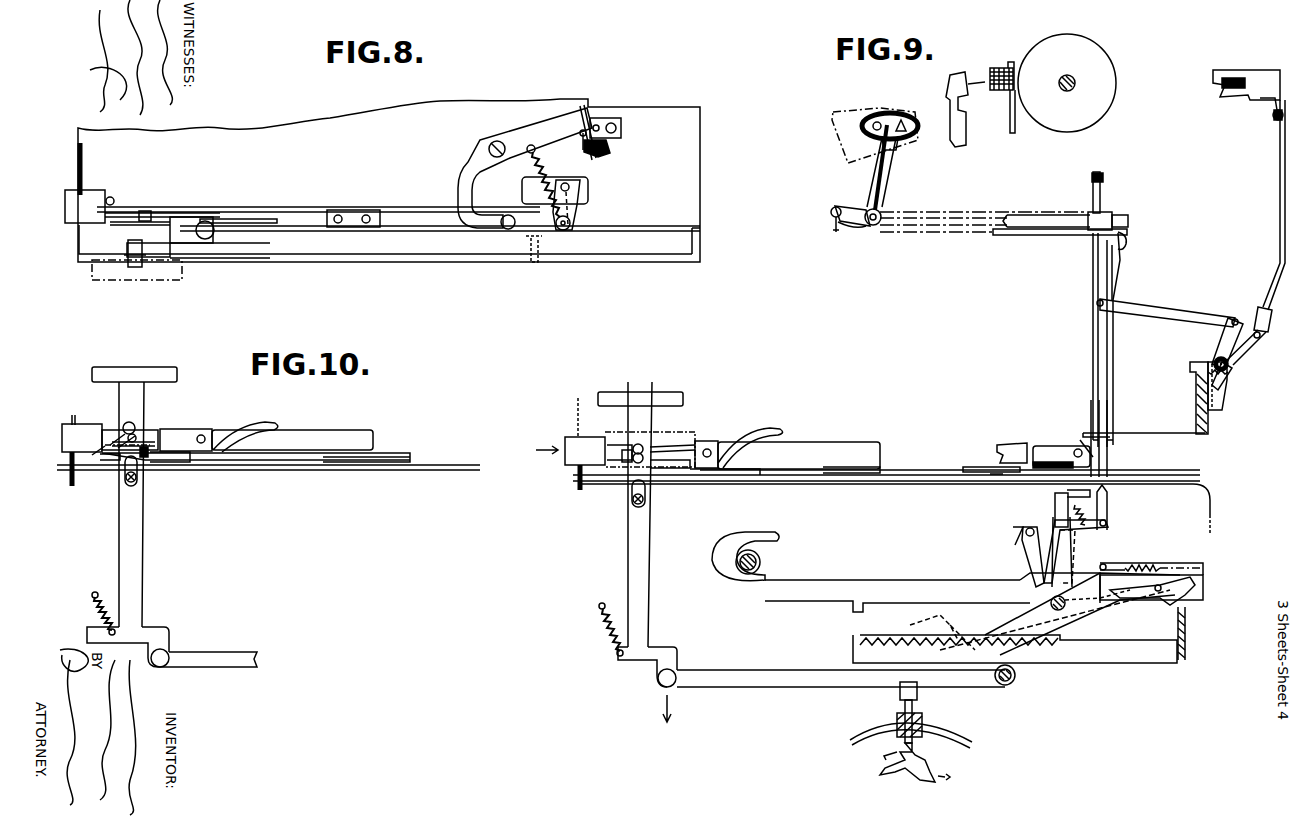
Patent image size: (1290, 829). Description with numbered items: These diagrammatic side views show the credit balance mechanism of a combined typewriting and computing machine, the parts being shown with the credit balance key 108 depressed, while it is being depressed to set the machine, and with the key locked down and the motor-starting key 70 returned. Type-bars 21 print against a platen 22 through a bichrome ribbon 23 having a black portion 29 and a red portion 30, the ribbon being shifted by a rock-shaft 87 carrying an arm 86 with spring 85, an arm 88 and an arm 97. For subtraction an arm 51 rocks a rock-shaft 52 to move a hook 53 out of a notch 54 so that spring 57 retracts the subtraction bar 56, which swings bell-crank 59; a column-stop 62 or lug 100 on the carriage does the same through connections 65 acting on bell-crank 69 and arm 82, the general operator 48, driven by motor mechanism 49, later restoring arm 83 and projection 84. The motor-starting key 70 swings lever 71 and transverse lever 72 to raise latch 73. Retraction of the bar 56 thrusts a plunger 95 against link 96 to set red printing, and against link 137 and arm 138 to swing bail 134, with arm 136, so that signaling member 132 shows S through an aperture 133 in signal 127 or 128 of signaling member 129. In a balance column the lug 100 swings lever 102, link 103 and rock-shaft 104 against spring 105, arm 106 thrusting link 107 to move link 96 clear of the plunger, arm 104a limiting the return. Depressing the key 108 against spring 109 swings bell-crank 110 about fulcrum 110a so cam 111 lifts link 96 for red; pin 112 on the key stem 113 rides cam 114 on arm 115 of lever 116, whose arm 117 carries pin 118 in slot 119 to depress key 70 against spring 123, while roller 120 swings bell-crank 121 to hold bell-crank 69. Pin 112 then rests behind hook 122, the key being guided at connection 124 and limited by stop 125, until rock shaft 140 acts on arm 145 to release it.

In FIG. 9, the type-bar 21 is at (966, 140).
In FIG. 9, the platen 22 is at (1067, 83).
In FIG. 9, the bichrome ribbon 23 is at (990, 73).
In FIG. 9, the black portion 29 is at (1010, 66).
In FIG. 9, the red portion 30 is at (1004, 90).
In FIG. 9, the general operator 48 is at (1058, 667).
In FIG. 9, the motor mechanism 49 is at (946, 777).
In FIG. 9, the arm 51 is at (1080, 535).
In FIG. 9, the rock-shaft 52 is at (1052, 606).
In FIG. 9, the hook 53 is at (1095, 600).
In FIG. 9, the notch 54 is at (1125, 595).
In FIG. 9, the subtraction bar 56 is at (986, 588).
In FIG. 9, the spring 57 is at (1172, 567).
In FIG. 9, the bell-crank 59 is at (1022, 545).
In FIG. 9, the column-stop 62 is at (1250, 100).
In FIG. 9, the connections 65 is at (1075, 620).
In FIG. 9, the bell-crank 69 is at (1175, 598).
In FIG. 8, the motor-starting key 70 is at (100, 280).
In FIG. 10, the motor-starting key 70 is at (177, 375).
In FIG. 9, the motor-starting key 70 is at (673, 392).
In FIG. 10, the lever 71 is at (205, 668).
In FIG. 9, the lever 71 is at (836, 676).
In FIG. 9, the transverse lever 72 is at (900, 692).
In FIG. 9, the latch 73 is at (918, 713).
In FIG. 9, the arm 82 is at (1072, 572).
In FIG. 9, the arm 83 is at (948, 622).
In FIG. 9, the projection 84 is at (852, 610).
In FIG. 9, the spring 85 is at (832, 230).
In FIG. 9, the arm 86 is at (856, 209).
In FIG. 9, the rock-shaft 87 is at (873, 228).
In FIG. 9, the arm 88 is at (1093, 201).
In FIG. 8, the plunger 95 is at (616, 143).
In FIG. 9, the plunger 95 is at (1108, 455).
In FIG. 8, the link 96 is at (581, 134).
In FIG. 9, the link 96 is at (1096, 290).
In FIG. 9, the arm 97 is at (1103, 220).
In FIG. 9, the lug 100 is at (1246, 85).
In FIG. 9, the lever 102 is at (1274, 120).
In FIG. 9, the link 103 is at (1278, 242).
In FIG. 9, the rock-shaft 104 is at (1230, 360).
In FIG. 9, the arm 104a is at (1222, 395).
In FIG. 9, the spring 105 is at (1226, 375).
In FIG. 8, the arm 106 is at (66, 237).
In FIG. 9, the arm 106 is at (1225, 343).
In FIG. 9, the link 107 is at (1180, 312).
In FIG. 10, the credit balance key 108 is at (64, 452).
In FIG. 9, the credit balance key 108 is at (566, 466).
In FIG. 8, the spring 109 is at (530, 170).
In FIG. 9, the spring 109 is at (1048, 446).
In FIG. 8, the bell-crank 110 is at (462, 179).
In FIG. 9, the bell-crank 110 is at (972, 467).
In FIG. 8, the fulcrum 110a is at (493, 146).
In FIG. 9, the fulcrum 110a is at (997, 484).
In FIG. 8, the cam 111 is at (583, 122).
In FIG. 9, the cam 111 is at (1085, 445).
In FIG. 8, the pin 112 is at (140, 225).
In FIG. 10, the pin 112 is at (150, 440).
In FIG. 9, the pin 112 is at (639, 444).
In FIG. 8, the credit balance key stem 113 is at (247, 207).
In FIG. 10, the credit balance key stem 113 is at (268, 450).
In FIG. 9, the credit balance key stem 113 is at (785, 458).
In FIG. 8, the cam 114 is at (120, 212).
In FIG. 9, the cam 114 is at (620, 446).
In FIG. 8, the arm 115 is at (176, 218).
In FIG. 10, the arm 115 is at (110, 460).
In FIG. 9, the arm 115 is at (660, 470).
In FIG. 8, the lever 116 is at (192, 250).
In FIG. 10, the lever 116 is at (176, 462).
In FIG. 8, the arm 117 is at (170, 257).
In FIG. 10, the arm 117 is at (186, 440).
In FIG. 9, the arm 117 is at (696, 454).
In FIG. 8, the pin 118 is at (135, 267).
In FIG. 10, the pin 118 is at (124, 426).
In FIG. 9, the pin 118 is at (627, 462).
In FIG. 10, the slot 119 is at (133, 434).
In FIG. 8, the roller 120 is at (555, 183).
In FIG. 9, the roller 120 is at (1096, 505).
In FIG. 8, the bell-crank 121 is at (586, 196).
In FIG. 9, the bell-crank 121 is at (1053, 505).
In FIG. 8, the hook 122 is at (145, 211).
In FIG. 10, the hook 122 is at (147, 457).
In FIG. 9, the hook 122 is at (655, 448).
In FIG. 10, the spring 123 is at (100, 614).
In FIG. 9, the spring 123 is at (604, 625).
In FIG. 8, the connection 124 is at (508, 231).
In FIG. 9, the connection 124 is at (1035, 455).
In FIG. 8, the stop 125 is at (108, 198).
In FIG. 10, the stop 125 is at (102, 456).
In FIG. 9, the signal 127 is at (912, 132).
In FIG. 9, the signal 128 is at (866, 135).
In FIG. 9, the signaling member 129 is at (888, 198).
In FIG. 9, the signaling member 132 is at (884, 174).
In FIG. 9, the aperture 133 is at (900, 145).
In FIG. 9, the bail 134 is at (1008, 236).
In FIG. 9, the arm 136 is at (848, 228).
In FIG. 8, the link 137 is at (608, 155).
In FIG. 9, the link 137 is at (1110, 403).
In FIG. 9, the arm 138 is at (1128, 240).
In FIG. 9, the rock shaft 140 is at (748, 575).
In FIG. 8, the arm 145 is at (257, 223).
In FIG. 10, the arm 145 is at (252, 424).
In FIG. 9, the arm 145 is at (765, 433).